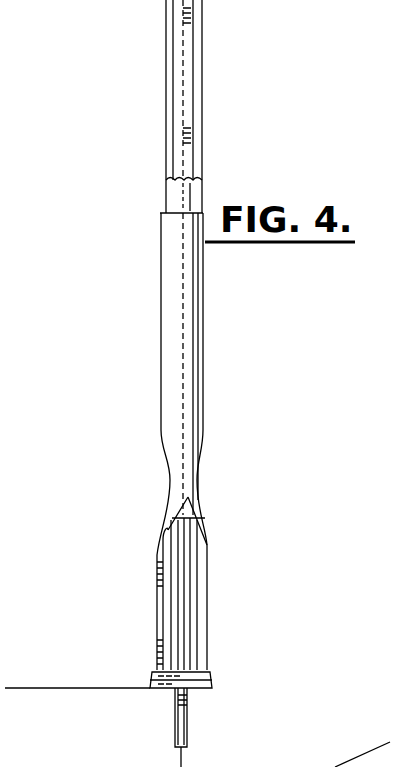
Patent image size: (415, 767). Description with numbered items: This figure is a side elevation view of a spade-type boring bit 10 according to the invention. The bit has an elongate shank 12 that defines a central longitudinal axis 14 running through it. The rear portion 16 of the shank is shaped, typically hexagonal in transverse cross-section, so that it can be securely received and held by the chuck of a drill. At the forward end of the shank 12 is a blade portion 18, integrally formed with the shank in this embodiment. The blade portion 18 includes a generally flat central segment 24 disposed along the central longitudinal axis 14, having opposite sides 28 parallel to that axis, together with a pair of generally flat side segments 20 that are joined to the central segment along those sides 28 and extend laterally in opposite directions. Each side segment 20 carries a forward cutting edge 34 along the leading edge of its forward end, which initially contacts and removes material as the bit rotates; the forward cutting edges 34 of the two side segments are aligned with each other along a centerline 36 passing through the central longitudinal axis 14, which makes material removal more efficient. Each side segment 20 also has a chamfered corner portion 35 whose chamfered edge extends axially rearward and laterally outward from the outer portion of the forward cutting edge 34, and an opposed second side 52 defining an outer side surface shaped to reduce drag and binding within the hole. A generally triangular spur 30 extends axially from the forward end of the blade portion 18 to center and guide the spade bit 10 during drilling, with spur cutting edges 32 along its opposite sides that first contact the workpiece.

The spade-type boring bit 10 is at (135, 352).
The elongate shank 12 is at (200, 343).
The central longitudinal axis 14 is at (180, 53).
The rear portion 16 is at (168, 135).
The blade portion 18 is at (208, 578).
The side segment 20 is at (160, 545).
The central segment 24 is at (200, 480).
The side of central segment 28 is at (205, 618).
The spur 30 is at (175, 730).
The spur cutting edge 32 is at (190, 748).
The forward cutting edge 34 is at (152, 690).
The chamfered corner portion 35 is at (121, 705).
The centerline 36 is at (360, 750).
The second side 52 is at (160, 600).